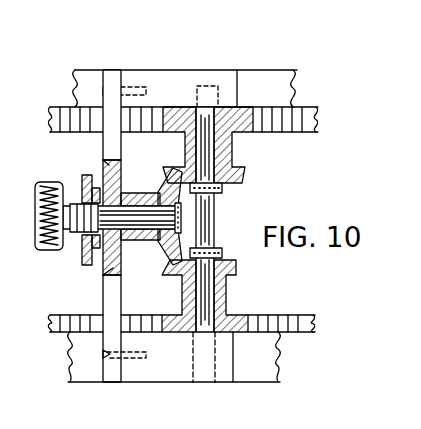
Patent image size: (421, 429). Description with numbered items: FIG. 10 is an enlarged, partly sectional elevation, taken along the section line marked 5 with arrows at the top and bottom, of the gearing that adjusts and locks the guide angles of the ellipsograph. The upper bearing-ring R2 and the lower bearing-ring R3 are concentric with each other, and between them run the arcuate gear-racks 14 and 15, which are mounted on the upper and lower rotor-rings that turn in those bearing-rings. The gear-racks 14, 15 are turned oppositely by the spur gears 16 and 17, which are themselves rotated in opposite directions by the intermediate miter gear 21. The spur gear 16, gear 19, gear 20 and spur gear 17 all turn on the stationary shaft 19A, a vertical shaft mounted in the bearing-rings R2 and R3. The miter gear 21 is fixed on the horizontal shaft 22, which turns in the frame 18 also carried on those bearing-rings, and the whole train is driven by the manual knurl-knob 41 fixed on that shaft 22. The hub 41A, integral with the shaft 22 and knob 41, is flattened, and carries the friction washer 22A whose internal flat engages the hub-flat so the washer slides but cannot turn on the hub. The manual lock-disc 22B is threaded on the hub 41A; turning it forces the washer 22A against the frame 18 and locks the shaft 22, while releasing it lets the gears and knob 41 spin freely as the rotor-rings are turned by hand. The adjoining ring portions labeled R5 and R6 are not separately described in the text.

The section line 5- 5 is at (208, 69).
The arcuate gear-rack 14 is at (310, 107).
The arcuate gear-rack 15 is at (316, 322).
The spur gear 16 is at (182, 107).
The spur gear 17 is at (173, 333).
The frame 18 is at (108, 70).
The gear 19 is at (244, 181).
The stationary shaft 19A is at (218, 210).
The gear 20 is at (238, 266).
The intermediate miter gear 21 is at (158, 192).
The shaft 22 is at (134, 241).
The friction washer 22A is at (98, 268).
The manual lock-disc 22B is at (86, 176).
The manual knurl-knob 41 is at (48, 250).
The hub 41A is at (73, 197).
The upper bearing-ring R2 is at (73, 88).
The lower bearing-ring R3 is at (66, 360).
The upper right frame member R5 is at (240, 90).
The lower right frame member R6 is at (233, 364).